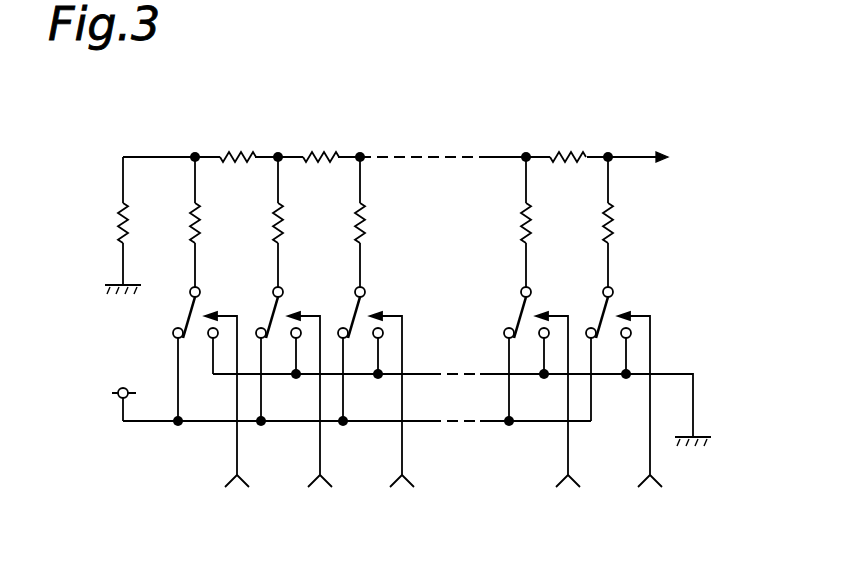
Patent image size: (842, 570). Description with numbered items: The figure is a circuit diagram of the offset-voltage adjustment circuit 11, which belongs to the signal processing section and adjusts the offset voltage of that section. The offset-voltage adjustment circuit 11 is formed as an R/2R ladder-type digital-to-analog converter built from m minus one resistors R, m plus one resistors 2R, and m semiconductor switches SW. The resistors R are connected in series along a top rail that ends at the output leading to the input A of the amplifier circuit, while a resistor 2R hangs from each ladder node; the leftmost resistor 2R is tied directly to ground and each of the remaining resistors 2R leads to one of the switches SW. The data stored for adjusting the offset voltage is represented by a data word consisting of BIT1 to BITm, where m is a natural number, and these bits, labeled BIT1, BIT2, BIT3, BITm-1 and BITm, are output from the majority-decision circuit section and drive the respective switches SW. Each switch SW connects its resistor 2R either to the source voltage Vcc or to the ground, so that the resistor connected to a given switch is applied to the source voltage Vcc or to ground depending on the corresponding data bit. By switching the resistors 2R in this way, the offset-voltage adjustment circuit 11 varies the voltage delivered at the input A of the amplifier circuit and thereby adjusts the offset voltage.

The offset-voltage adjustment circuit 11 is at (166, 147).
The resistor R is at (234, 150).
The resistor 2R is at (386, 206).
The semiconductor switch SW is at (387, 291).
The source voltage Vcc is at (122, 390).
The input A of amplifier circuit A is at (686, 158).
The BIT1 of the offset-adjustment data word BIT1 is at (230, 416).
The BIT2 of the offset-adjustment data word BIT2 is at (317, 416).
The BIT3 of the offset-adjustment data word BIT3 is at (403, 416).
The BITm-1 of the offset-adjustment data word BITm-1 is at (563, 416).
The BITm of the offset-adjustment data word BITm is at (651, 416).